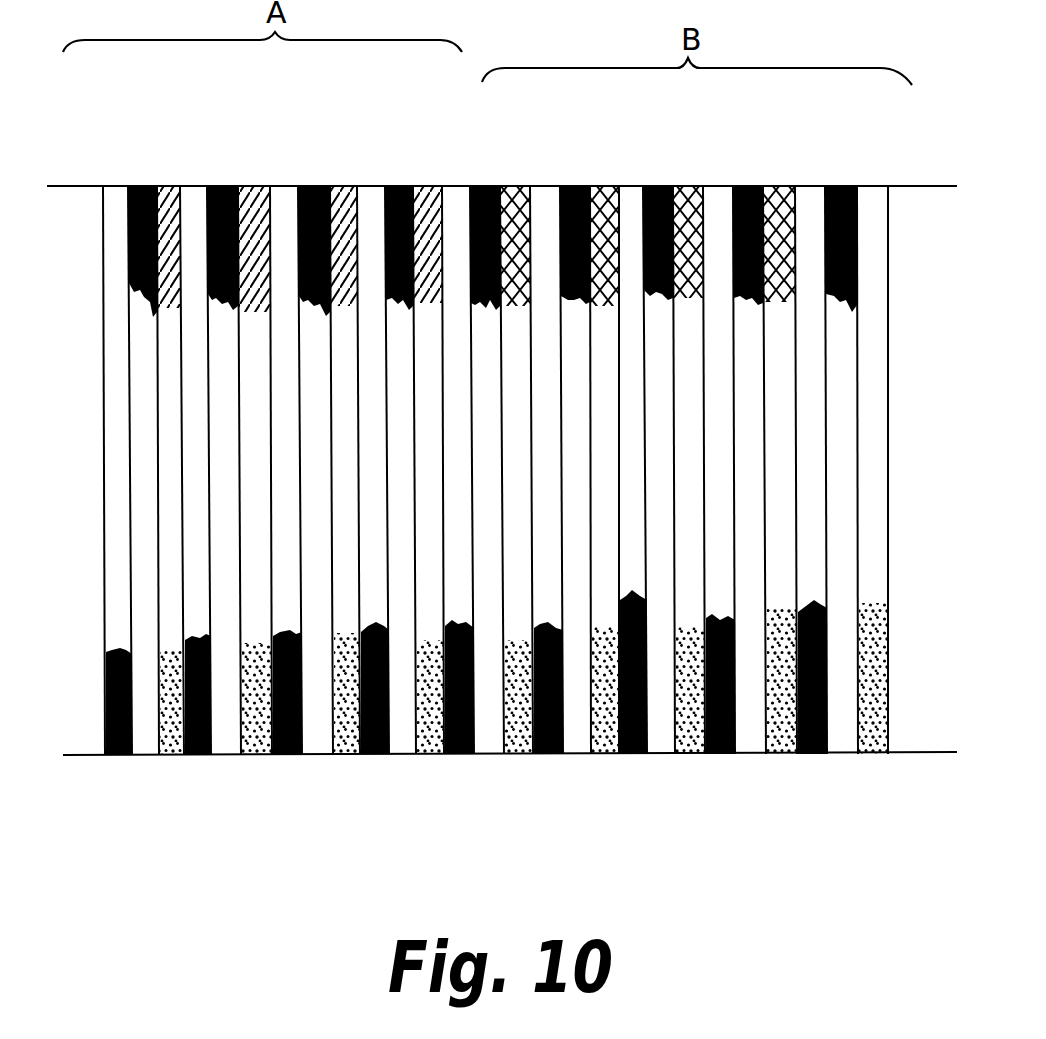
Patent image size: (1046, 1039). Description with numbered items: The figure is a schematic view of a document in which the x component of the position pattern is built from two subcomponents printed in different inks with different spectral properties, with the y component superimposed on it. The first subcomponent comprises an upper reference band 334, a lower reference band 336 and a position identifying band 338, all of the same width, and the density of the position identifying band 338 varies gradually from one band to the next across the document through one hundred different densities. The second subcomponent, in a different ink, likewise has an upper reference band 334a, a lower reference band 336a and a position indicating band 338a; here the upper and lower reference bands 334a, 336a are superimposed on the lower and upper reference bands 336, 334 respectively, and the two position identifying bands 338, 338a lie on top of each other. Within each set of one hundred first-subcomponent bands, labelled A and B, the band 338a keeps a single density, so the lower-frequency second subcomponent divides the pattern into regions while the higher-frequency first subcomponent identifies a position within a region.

The upper reference band 334 is at (202, 755).
The upper reference band of the second subcomponent 334a is at (227, 186).
The lower reference band 336 is at (232, 755).
The lower reference band of the second subcomponent 336a is at (194, 202).
The position identifying band 338 is at (173, 755).
The position indicating band of the second subcomponent 338a is at (172, 194).